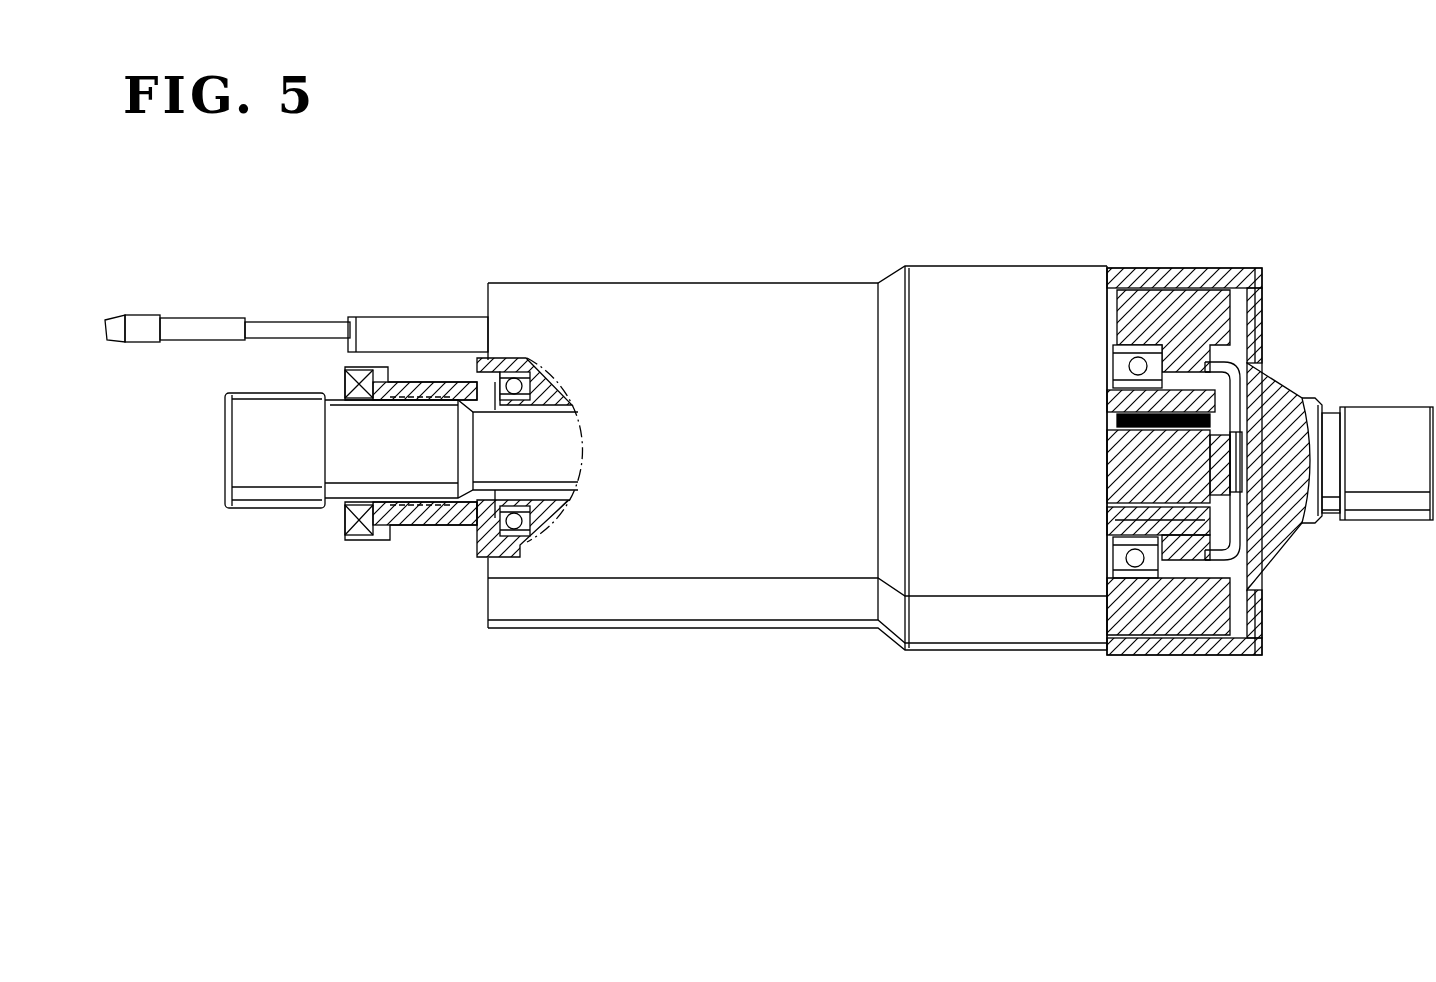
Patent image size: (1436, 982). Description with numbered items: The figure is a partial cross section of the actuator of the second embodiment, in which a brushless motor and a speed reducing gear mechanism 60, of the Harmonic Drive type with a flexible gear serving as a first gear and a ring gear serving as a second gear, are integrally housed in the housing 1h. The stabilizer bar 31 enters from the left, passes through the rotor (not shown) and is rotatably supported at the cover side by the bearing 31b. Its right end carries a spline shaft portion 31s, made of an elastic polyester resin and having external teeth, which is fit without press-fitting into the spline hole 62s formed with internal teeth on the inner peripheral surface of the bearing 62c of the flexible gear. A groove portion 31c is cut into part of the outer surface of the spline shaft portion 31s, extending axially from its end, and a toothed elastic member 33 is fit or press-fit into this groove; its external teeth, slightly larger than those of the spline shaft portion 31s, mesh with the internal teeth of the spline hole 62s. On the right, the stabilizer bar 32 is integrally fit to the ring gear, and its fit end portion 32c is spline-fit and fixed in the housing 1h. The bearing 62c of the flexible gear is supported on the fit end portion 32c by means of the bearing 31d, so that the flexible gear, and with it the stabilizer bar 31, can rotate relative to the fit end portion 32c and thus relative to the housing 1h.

The housing 1h is at (1170, 278).
The stabilizer bar 31 is at (280, 475).
The bearing 31b is at (410, 507).
The groove portion 31c is at (1106, 428).
The bearing 31d is at (1133, 565).
The spline shaft portion 31s is at (1168, 536).
The stabilizer bar 32 is at (1378, 432).
The fit end portion 32c is at (1262, 378).
The toothed elastic member 33 is at (1250, 360).
The gear mechanism 60 is at (1010, 537).
The bearing of the flexible gear 62c is at (1104, 392).
The spline hole 62s is at (1105, 507).